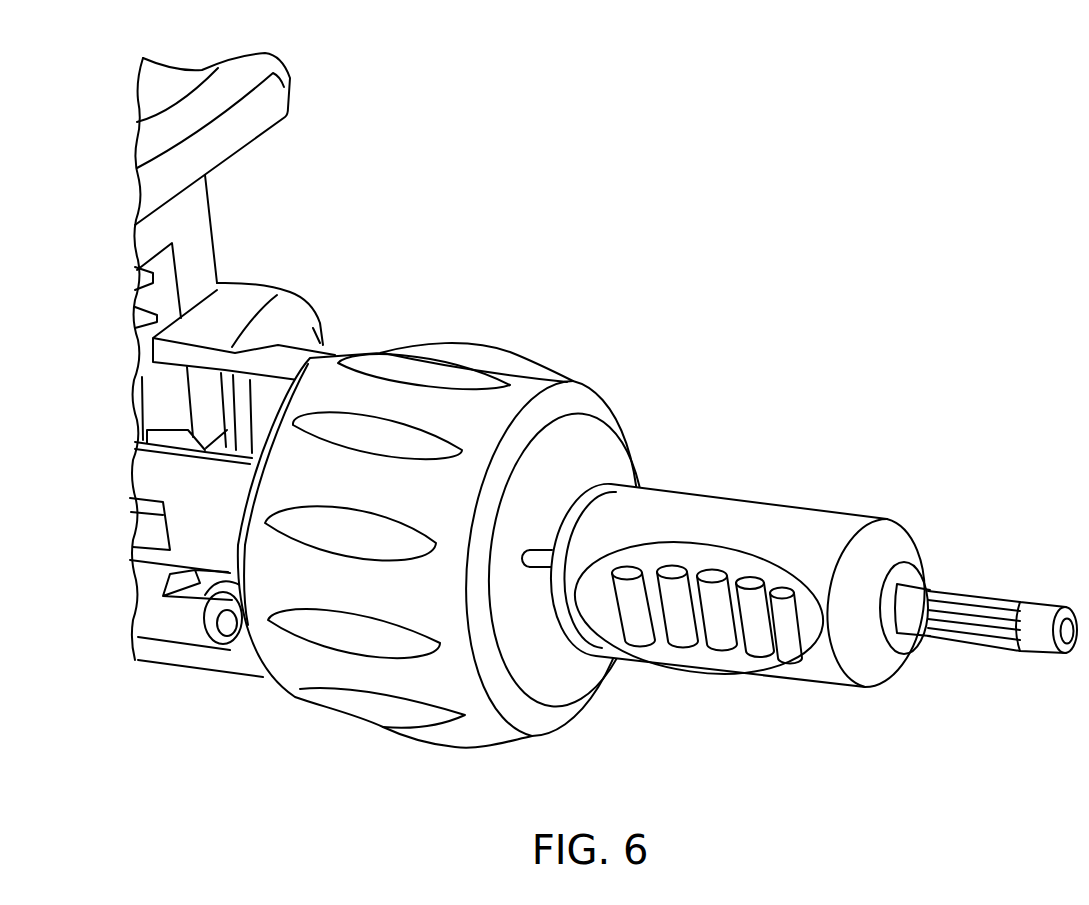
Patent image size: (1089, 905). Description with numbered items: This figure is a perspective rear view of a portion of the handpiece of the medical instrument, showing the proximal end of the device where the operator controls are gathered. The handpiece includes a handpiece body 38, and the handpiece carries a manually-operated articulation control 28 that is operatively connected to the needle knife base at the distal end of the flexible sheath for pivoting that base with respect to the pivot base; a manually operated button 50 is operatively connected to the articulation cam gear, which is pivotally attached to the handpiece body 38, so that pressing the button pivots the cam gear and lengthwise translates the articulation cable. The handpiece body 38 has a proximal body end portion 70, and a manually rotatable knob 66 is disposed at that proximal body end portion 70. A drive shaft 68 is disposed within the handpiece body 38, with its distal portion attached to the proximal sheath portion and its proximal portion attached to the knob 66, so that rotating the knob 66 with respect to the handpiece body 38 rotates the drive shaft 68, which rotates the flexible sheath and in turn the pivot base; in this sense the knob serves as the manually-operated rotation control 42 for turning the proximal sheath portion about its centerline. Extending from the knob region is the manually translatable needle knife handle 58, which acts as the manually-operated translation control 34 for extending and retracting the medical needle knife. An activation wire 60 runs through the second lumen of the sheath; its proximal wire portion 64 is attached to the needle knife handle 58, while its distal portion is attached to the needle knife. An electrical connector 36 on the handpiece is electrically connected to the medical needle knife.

The manually-operated articulation control 28 is at (267, 162).
The manually operated button 50 is at (291, 100).
The handpiece body 38 is at (268, 290).
The drive shaft 68 is at (150, 477).
The proximal body end portion 70 is at (222, 674).
The manually-operated rotation control 42 is at (448, 575).
The manually rotatable knob 66 is at (373, 724).
The activation wire 60 is at (541, 577).
The proximal wire portion 64 is at (537, 550).
The manually translatable needle knife handle 58 is at (717, 497).
The manually-operated translation control 34 is at (814, 546).
The electrical connector 36 is at (983, 591).